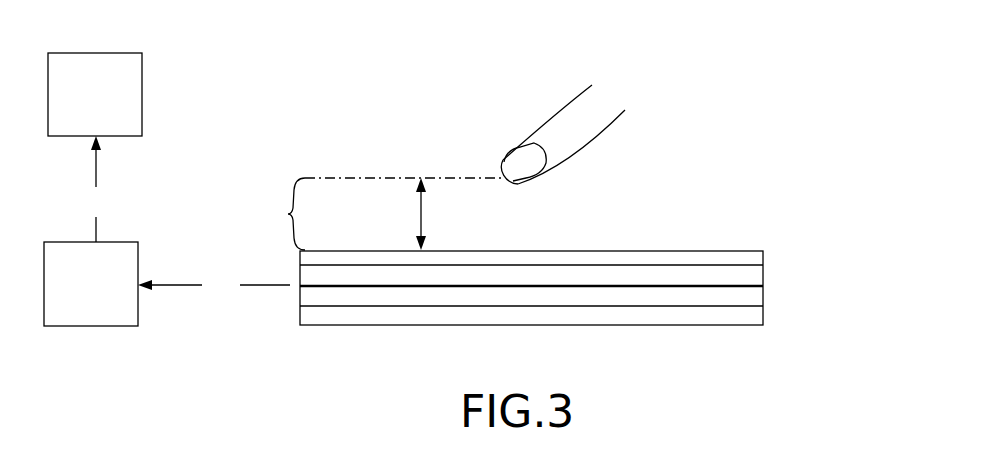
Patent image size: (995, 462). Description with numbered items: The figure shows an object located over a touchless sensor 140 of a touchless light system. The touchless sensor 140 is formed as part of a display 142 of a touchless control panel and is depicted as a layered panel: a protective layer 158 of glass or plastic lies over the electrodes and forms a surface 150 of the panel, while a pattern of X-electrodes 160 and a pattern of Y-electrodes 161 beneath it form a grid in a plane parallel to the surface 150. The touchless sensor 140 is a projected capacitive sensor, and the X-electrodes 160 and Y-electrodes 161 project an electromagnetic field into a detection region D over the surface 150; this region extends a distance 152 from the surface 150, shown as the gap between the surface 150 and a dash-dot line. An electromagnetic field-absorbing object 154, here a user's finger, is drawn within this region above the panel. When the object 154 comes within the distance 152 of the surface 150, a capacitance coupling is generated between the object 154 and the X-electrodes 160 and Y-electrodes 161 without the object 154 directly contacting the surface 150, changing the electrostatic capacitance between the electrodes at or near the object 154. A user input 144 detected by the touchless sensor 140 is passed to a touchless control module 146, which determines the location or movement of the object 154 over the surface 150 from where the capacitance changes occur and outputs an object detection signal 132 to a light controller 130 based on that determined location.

The light controller 130 is at (78, 106).
The object detection signal 132 is at (96, 189).
The touchless sensor 140 is at (246, 192).
The display 142 is at (780, 252).
The user input 144 is at (214, 285).
The touchless control module 146 is at (74, 295).
The surface 150 is at (693, 250).
The distance 152 is at (423, 212).
The electromagnetic field-absorbing object 154 is at (560, 118).
The protective layer 158 is at (748, 258).
The X-electrodes 160 is at (633, 272).
The Y-electrodes 161 is at (742, 298).